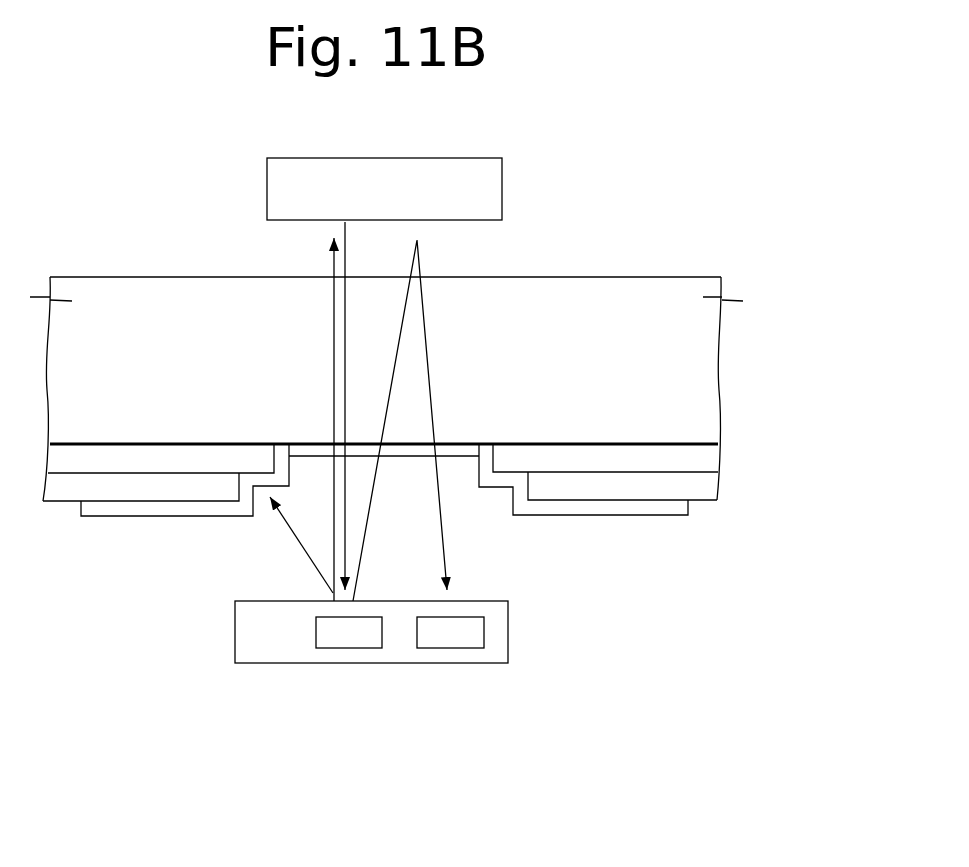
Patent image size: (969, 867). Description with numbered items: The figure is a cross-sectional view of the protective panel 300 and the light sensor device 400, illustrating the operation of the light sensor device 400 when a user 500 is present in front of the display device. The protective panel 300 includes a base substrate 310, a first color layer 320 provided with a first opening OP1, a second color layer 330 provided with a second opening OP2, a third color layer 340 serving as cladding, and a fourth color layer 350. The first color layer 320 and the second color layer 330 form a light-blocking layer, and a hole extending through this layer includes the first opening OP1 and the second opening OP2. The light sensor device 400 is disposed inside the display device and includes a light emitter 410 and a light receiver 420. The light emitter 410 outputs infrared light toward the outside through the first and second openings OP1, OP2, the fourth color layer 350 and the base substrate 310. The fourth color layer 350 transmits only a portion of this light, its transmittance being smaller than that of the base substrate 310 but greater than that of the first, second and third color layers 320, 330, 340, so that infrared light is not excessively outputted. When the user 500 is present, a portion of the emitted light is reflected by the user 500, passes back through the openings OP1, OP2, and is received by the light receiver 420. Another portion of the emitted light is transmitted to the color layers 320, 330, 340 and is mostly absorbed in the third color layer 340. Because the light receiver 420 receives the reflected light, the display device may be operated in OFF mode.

The user 500 is at (487, 187).
The protective panel 300 is at (805, 351).
The base substrate 310 is at (705, 357).
The fourth color layer 350 is at (463, 452).
The first color layer 320 is at (707, 457).
The second color layer 330 is at (707, 485).
The third color layer 340 is at (677, 508).
The first opening OP1 is at (403, 466).
The second opening OP2 is at (490, 498).
The light sensor device 400 is at (250, 663).
The light emitter 410 is at (345, 648).
The light receiver 420 is at (443, 648).